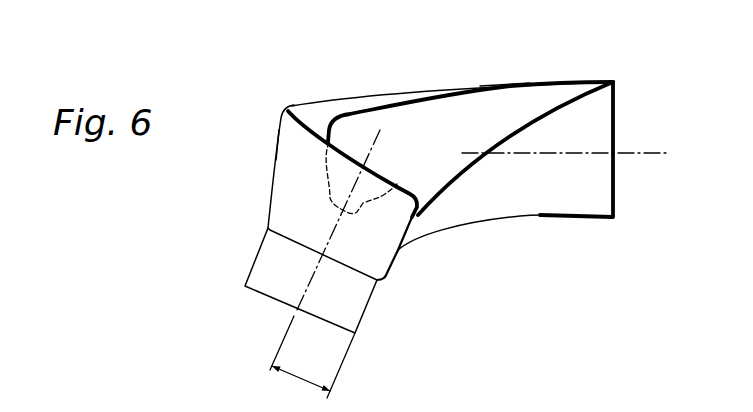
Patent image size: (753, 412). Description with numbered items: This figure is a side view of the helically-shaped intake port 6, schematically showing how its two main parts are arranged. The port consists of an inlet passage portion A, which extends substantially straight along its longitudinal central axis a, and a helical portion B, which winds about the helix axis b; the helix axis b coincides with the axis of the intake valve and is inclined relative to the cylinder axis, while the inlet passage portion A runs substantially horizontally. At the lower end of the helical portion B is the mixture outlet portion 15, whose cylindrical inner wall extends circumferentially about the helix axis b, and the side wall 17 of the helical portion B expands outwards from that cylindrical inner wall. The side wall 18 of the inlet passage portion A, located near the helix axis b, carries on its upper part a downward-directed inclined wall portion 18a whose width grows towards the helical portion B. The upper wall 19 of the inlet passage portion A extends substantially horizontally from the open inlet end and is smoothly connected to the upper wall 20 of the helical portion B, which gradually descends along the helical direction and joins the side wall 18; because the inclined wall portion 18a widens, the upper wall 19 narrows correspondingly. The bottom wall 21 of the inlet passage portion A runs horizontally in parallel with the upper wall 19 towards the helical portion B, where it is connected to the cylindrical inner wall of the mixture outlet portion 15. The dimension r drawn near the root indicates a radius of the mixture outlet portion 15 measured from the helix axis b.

The helically-shaped intake port 6 is at (568, 76).
The mixture outlet portion 15 is at (352, 300).
The side wall of the helical portion 17 is at (283, 188).
The side wall of the inlet passage portion 18 is at (502, 208).
The inclined wall portion 18a is at (426, 128).
The upper wall of the inlet passage portion 19 is at (470, 85).
The upper wall of the helical portion 20 is at (313, 117).
The bottom wall of the inlet passage portion 21 is at (567, 215).
The inlet passage portion A is at (505, 74).
The helical portion B is at (270, 129).
The longitudinal central axis a is at (645, 153).
The helix axis b is at (290, 322).
The radius r is at (313, 365).